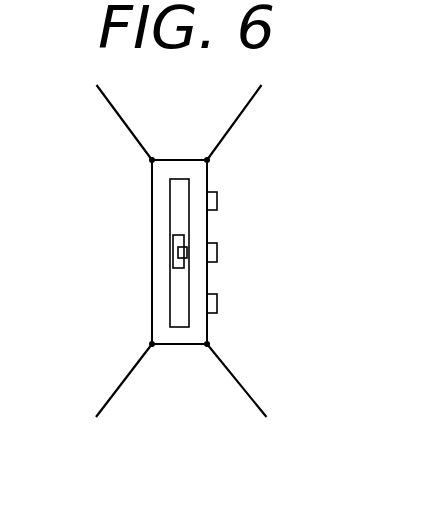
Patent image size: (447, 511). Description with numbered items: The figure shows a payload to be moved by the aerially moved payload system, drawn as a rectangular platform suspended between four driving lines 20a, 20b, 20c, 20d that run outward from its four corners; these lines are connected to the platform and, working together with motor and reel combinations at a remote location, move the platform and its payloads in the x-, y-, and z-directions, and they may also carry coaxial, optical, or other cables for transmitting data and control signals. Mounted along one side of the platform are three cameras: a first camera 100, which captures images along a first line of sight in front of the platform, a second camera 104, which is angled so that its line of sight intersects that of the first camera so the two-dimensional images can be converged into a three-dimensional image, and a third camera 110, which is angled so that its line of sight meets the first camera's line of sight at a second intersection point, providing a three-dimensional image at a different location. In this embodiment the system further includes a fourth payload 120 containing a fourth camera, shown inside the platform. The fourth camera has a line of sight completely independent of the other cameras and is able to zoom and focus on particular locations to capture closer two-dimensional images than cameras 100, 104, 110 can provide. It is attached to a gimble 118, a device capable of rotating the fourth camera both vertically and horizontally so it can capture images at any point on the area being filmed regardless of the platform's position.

The line 20a is at (116, 111).
The line 20b is at (230, 125).
The line 20c is at (224, 366).
The line 20d is at (120, 384).
The first camera 100 is at (217, 205).
The second camera 104 is at (217, 252).
The third camera 110 is at (217, 302).
The gimble 118 is at (173, 262).
The fourth payload 120 is at (178, 250).